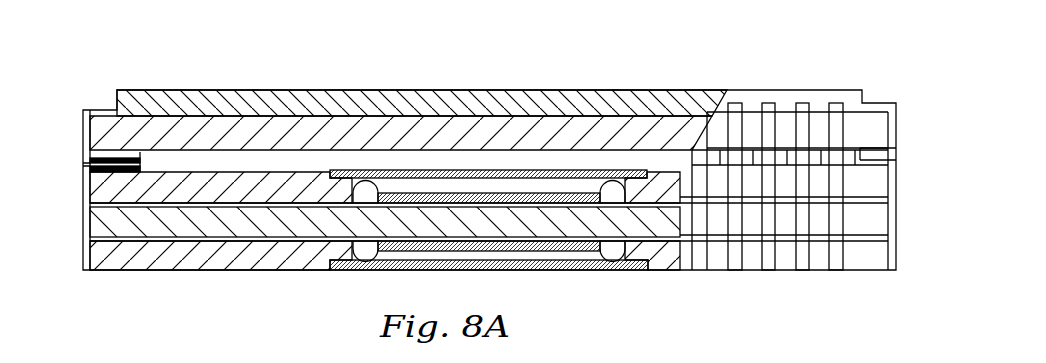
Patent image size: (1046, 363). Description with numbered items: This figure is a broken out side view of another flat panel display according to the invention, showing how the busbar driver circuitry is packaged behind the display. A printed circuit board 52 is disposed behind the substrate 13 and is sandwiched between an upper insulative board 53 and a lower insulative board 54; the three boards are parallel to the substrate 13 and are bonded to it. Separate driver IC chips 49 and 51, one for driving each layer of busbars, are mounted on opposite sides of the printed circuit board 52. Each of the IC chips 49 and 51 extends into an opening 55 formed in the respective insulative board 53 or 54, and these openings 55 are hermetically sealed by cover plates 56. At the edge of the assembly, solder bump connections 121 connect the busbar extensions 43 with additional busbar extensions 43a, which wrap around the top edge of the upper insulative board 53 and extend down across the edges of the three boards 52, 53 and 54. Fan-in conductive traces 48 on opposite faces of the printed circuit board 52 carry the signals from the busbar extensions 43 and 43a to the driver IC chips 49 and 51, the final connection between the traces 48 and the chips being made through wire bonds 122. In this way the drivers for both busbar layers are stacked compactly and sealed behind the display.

The busbar extensions 43 is at (95, 110).
The additional busbar extensions 43a is at (88, 230).
The substrate 13 is at (380, 125).
The solder bump connections 121 is at (110, 164).
The upper insulative board 53 is at (133, 185).
The fan-in conductive traces 48 is at (246, 203).
The IC chip 49 is at (452, 196).
The wire bonds 122 is at (606, 182).
The printed circuit board 52 is at (203, 226).
The lower insulative board 54 is at (278, 262).
The cover plates 56 is at (427, 265).
The IC chip 51 is at (493, 242).
The openings 55 is at (611, 267).